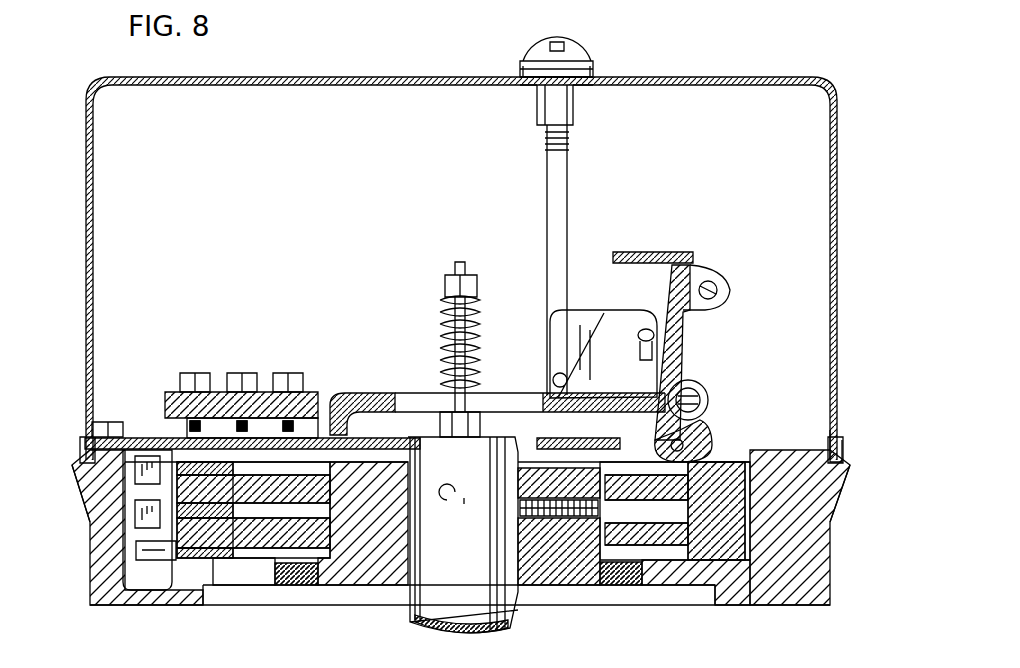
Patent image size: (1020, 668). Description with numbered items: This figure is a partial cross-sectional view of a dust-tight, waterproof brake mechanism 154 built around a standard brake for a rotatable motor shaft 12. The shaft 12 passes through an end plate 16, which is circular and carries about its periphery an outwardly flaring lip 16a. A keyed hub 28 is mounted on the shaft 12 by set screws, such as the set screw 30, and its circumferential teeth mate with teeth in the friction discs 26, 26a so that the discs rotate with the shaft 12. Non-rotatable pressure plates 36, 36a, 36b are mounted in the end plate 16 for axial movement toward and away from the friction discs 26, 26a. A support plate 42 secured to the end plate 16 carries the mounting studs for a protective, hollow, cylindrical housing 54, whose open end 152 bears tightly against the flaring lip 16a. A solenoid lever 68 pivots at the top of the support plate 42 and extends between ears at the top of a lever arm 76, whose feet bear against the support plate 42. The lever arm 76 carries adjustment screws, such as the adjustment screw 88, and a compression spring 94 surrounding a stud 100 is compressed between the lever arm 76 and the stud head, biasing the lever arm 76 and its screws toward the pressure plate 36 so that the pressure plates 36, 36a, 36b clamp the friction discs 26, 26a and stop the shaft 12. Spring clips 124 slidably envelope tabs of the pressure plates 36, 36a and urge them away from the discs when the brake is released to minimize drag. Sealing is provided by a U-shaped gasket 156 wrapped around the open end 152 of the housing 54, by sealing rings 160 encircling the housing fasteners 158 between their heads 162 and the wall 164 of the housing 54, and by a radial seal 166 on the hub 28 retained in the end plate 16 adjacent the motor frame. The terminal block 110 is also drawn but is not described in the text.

The motor shaft 12 is at (498, 598).
The end plate 16 is at (820, 553).
The outwardly flaring lip 16a is at (70, 476).
The friction disc 26 is at (380, 488).
The friction disc 26a is at (380, 535).
The keyed hub 28 is at (370, 578).
The set screw 30 is at (560, 520).
The pressure plate 36 is at (192, 470).
The pressure plate 36a is at (152, 560).
The pressure plate 36b is at (213, 556).
The support plate 42 is at (140, 440).
The housing 54 is at (327, 66).
The solenoid lever 68 is at (672, 352).
The lever arm 76 is at (590, 398).
The adjustment screw 88 is at (472, 382).
The compression spring 94 is at (480, 332).
The stud 100 is at (462, 262).
The terminals 110 is at (288, 372).
The spring clip 124 is at (135, 520).
The open end 152 is at (838, 432).
The dust-tight, waterproof brake mechanism 154 is at (686, 58).
The U-shaped gasket 156 is at (80, 442).
The housing fastener 158 is at (570, 100).
The sealing ring 160 is at (592, 72).
The head 162 is at (568, 46).
The wall 164 is at (490, 78).
The radial seal 166 is at (292, 580).